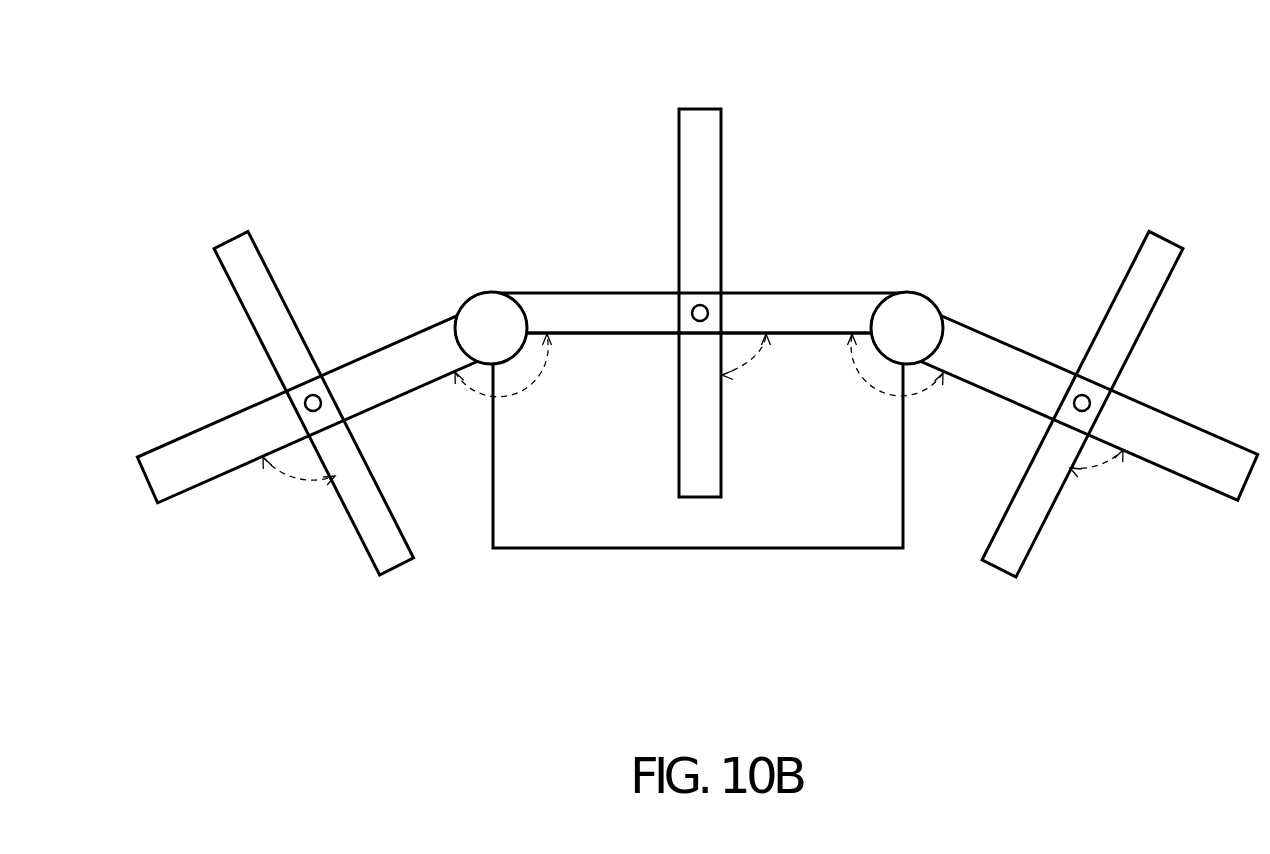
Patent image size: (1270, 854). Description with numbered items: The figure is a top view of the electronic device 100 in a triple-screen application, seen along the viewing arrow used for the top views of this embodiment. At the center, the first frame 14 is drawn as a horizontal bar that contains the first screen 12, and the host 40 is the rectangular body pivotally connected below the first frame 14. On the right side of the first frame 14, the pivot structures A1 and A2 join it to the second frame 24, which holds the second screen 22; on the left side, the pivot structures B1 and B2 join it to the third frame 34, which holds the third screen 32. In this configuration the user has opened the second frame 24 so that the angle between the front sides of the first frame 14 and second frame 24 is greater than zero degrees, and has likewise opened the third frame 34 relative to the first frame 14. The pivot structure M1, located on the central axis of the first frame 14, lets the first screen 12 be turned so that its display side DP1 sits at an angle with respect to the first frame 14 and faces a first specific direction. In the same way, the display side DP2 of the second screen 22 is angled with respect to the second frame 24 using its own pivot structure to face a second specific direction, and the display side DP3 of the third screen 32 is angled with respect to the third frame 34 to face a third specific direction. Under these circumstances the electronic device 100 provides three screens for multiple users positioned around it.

The electronic device 100 is at (983, 133).
The first screen 12 is at (713, 482).
The first frame 14 is at (616, 326).
The second screen 22 is at (1028, 551).
The second frame 24 is at (1222, 471).
The third screen 32 is at (388, 532).
The third frame 34 is at (202, 471).
The host 40 is at (525, 545).
The pivot structure M1 is at (708, 313).
The display side of the first screen DP1 is at (721, 143).
The display side of the second screen DP2 is at (1170, 278).
The display side of the third screen DP3 is at (258, 250).